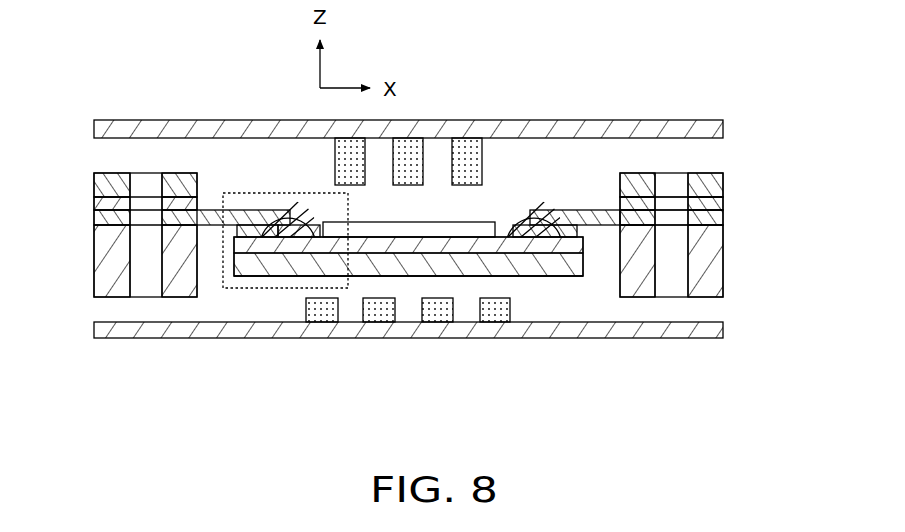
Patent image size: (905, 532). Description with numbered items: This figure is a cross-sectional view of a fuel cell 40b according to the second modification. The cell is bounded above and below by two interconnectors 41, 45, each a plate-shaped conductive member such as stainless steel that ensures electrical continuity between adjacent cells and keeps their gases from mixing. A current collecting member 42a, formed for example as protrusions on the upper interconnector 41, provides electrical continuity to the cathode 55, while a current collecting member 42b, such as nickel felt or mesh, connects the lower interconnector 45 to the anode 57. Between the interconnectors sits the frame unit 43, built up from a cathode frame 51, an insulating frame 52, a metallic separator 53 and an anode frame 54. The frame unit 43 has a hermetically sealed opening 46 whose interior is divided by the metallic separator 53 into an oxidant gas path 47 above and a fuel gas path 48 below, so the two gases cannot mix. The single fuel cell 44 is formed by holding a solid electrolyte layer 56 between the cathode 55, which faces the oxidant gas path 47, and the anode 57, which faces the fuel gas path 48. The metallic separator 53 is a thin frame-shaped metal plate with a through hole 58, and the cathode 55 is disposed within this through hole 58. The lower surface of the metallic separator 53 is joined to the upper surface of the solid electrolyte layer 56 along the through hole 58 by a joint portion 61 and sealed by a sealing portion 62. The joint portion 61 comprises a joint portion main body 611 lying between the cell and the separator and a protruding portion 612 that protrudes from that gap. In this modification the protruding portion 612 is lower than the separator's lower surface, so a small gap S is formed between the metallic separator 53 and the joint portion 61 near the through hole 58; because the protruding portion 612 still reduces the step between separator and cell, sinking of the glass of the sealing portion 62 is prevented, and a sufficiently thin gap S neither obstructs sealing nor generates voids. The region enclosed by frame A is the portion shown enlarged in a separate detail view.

The fuel cell 40b is at (86, 86).
The interconnector 41 is at (710, 131).
The current collecting member 42a is at (484, 161).
The current collecting member 42b is at (512, 302).
The frame unit 43 is at (784, 168).
The single fuel cell 44 is at (578, 360).
The interconnector 45 is at (716, 333).
The opening 46 is at (619, 185).
The oxidant gas path 47 is at (233, 180).
The fuel gas path 48 is at (418, 278).
The cathode frame 51 is at (724, 186).
The insulating frame 52 is at (724, 205).
The metallic separator 53 is at (724, 219).
The anode frame 54 is at (724, 252).
The cathode 55 is at (487, 243).
The solid electrolyte layer 56 is at (471, 258).
The anode 57 is at (459, 270).
The through hole 58 is at (498, 229).
The joint portion 61 is at (302, 377).
The joint portion main body 611 is at (256, 238).
The protruding portion 612 is at (294, 238).
The sealing portion 62 is at (270, 200).
The gap S is at (300, 227).
The frame A is at (350, 208).